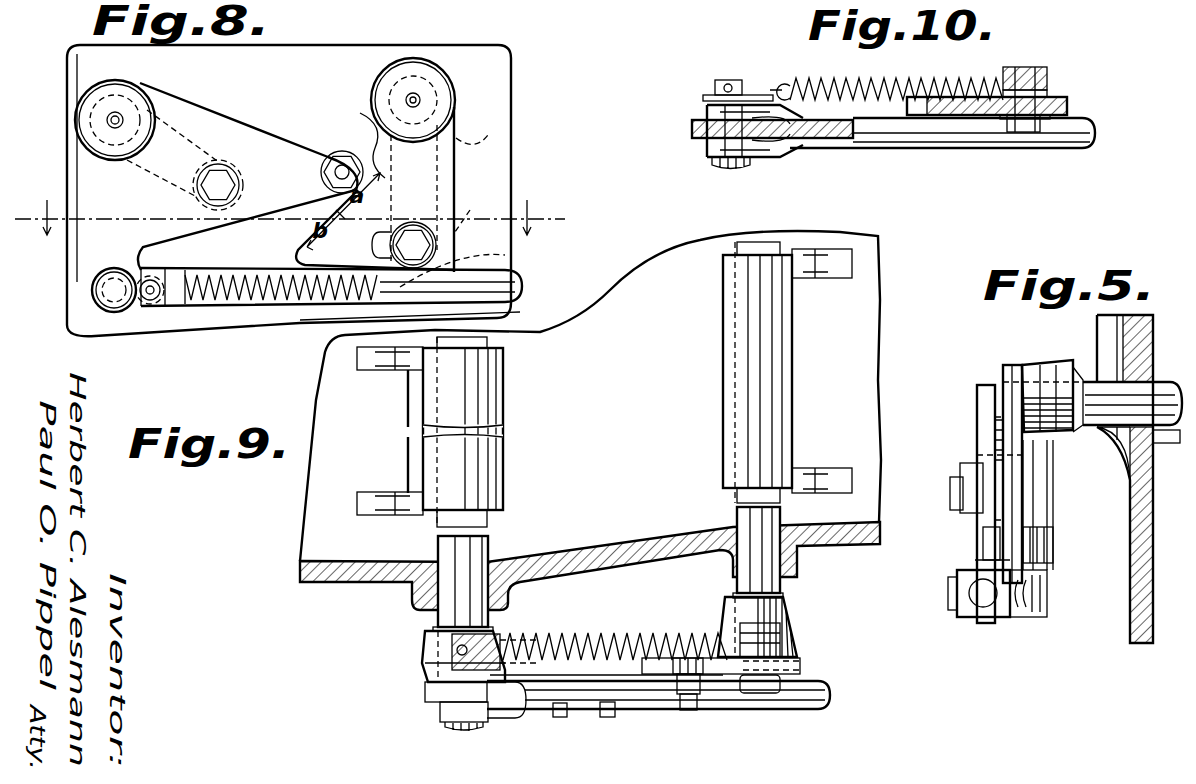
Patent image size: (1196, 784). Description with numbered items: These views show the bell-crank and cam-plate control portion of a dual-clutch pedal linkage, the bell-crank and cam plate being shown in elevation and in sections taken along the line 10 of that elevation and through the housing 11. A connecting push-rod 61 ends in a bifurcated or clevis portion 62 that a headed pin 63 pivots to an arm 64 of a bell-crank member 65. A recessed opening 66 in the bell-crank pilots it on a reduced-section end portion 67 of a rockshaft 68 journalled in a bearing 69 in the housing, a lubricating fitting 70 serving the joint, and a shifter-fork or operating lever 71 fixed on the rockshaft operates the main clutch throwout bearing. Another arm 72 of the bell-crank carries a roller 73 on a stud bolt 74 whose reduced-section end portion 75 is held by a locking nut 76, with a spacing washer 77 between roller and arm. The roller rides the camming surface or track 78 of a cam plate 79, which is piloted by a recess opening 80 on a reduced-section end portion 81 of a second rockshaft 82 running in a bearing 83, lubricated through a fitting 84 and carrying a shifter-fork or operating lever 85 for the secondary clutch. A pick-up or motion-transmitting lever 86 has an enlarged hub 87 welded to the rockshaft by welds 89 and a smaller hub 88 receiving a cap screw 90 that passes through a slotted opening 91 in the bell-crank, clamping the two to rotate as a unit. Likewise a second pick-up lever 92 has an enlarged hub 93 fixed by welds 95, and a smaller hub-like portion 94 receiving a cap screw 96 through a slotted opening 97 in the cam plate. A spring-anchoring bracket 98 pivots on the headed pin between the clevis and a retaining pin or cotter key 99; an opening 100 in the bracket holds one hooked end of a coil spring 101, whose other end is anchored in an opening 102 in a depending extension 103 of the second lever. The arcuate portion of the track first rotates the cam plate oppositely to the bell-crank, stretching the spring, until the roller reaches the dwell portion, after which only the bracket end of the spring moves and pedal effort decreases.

In FIG. 8, the section line 10- 10 is at (290, 215).
In FIG. 5, the housing 11 is at (1152, 326).
In FIG. 9, the housing 11 is at (326, 584).
In FIG. 8, the connecting push-rod 61 is at (331, 294).
In FIG. 10, the connecting push-rod 61 is at (896, 149).
In FIG. 9, the connecting push-rod 61 is at (815, 710).
In FIG. 8, the bifurcated or clevis portion 62 is at (176, 312).
In FIG. 10, the bifurcated or clevis portion 62 is at (776, 158).
In FIG. 5, the bifurcated or clevis portion 62 is at (962, 616).
In FIG. 9, the bifurcated or clevis portion 62 is at (518, 719).
In FIG. 8, the headed pin 63 is at (112, 313).
In FIG. 10, the headed pin 63 is at (724, 171).
In FIG. 5, the headed pin 63 is at (948, 591).
In FIG. 9, the headed pin 63 is at (466, 732).
In FIG. 8, the arm 64 is at (88, 252).
In FIG. 5, the arm 64 is at (975, 566).
In FIG. 8, the bell-crank member 65 is at (227, 94).
In FIG. 10, the bell-crank member 65 is at (685, 138).
In FIG. 5, the bell-crank member 65 is at (975, 382).
In FIG. 9, the recessed opening 66 is at (440, 706).
In FIG. 9, the reduced-section end portion 67 is at (445, 689).
In FIG. 9, the rockshaft 68 is at (480, 546).
In FIG. 9, the bearing 69 is at (420, 599).
In FIG. 8, the lubricating fitting 70 is at (120, 118).
In FIG. 9, the shifter-fork or operating lever 71 is at (504, 456).
In FIG. 8, the arm 72 is at (268, 136).
In FIG. 8, the roller 73 is at (335, 152).
In FIG. 5, the roller 73 is at (985, 457).
In FIG. 9, the roller 73 is at (705, 681).
In FIG. 9, the stud bolt 74 is at (688, 656).
In FIG. 9, the reduced-section end portion 75 is at (688, 695).
In FIG. 5, the locking nut 76 is at (962, 464).
In FIG. 9, the locking nut 76 is at (690, 681).
In FIG. 9, the spacing washer 77 is at (675, 681).
In FIG. 8, the camming surface or track 78 is at (358, 137).
In FIG. 8, the cam plate 79 is at (465, 145).
In FIG. 10, the cam plate 79 is at (1077, 99).
In FIG. 5, the cam plate 79 is at (1015, 356).
In FIG. 9, the recess opening 80 is at (801, 672).
In FIG. 9, the reduced-section end portion 81 is at (801, 661).
In FIG. 5, the rockshaft 82 is at (1150, 390).
In FIG. 9, the rockshaft 82 is at (737, 523).
In FIG. 5, the bearing 83 is at (1112, 372).
In FIG. 9, the bearing 83 is at (798, 566).
In FIG. 8, the lubricating fitting 84 is at (418, 100).
In FIG. 9, the shifter-fork or operating lever 85 is at (723, 394).
In FIG. 8, the pick-up or motion-transmitting lever 86 is at (196, 142).
In FIG. 9, the pick-up or motion-transmitting lever 86 is at (541, 656).
In FIG. 8, the enlarged hub 87 is at (115, 104).
In FIG. 9, the enlarged hub 87 is at (420, 651).
In FIG. 9, the smaller hub 88 is at (605, 718).
In FIG. 9, the welds 89 is at (434, 629).
In FIG. 8, the cap screw 90 is at (240, 190).
In FIG. 5, the cap screw 90 is at (952, 496).
In FIG. 9, the cap screw 90 is at (560, 718).
In FIG. 8, the slotted opening 91 is at (241, 178).
In FIG. 8, the pick-up or motion-transmitting lever 92 is at (477, 148).
In FIG. 10, the pick-up or motion-transmitting lever 92 is at (1050, 86).
In FIG. 5, the pick-up or motion-transmitting lever 92 is at (1040, 492).
In FIG. 8, the enlarged hub 93 is at (456, 100).
In FIG. 5, the enlarged hub 93 is at (1050, 362).
In FIG. 9, the enlarged hub 93 is at (801, 626).
In FIG. 8, the smaller hub-like portion 94 is at (471, 207).
In FIG. 10, the smaller hub-like portion 94 is at (1046, 76).
In FIG. 5, the smaller hub-like portion 94 is at (1046, 527).
In FIG. 5, the welds 95 is at (1080, 376).
In FIG. 9, the welds 95 is at (786, 601).
In FIG. 8, the cap screw 96 is at (436, 245).
In FIG. 10, the cap screw 96 is at (1026, 134).
In FIG. 5, the cap screw 96 is at (984, 546).
In FIG. 8, the slotted opening 97 is at (374, 245).
In FIG. 8, the spring-anchoring bracket 98 is at (158, 277).
In FIG. 10, the spring-anchoring bracket 98 is at (715, 88).
In FIG. 9, the spring-anchoring bracket 98 is at (500, 640).
In FIG. 10, the retaining pin or cotter key 99 is at (738, 86).
In FIG. 9, the retaining pin or cotter key 99 is at (468, 646).
In FIG. 8, the opening 100 is at (150, 303).
In FIG. 10, the opening 100 is at (780, 84).
In FIG. 8, the coil spring 101 is at (208, 280).
In FIG. 10, the coil spring 101 is at (880, 86).
In FIG. 5, the coil spring 101 is at (1005, 617).
In FIG. 9, the coil spring 101 is at (621, 641).
In FIG. 8, the opening 102 is at (440, 301).
In FIG. 10, the opening 102 is at (1026, 66).
In FIG. 8, the depending extension 103 is at (475, 263).
In FIG. 5, the depending extension 103 is at (1046, 586).